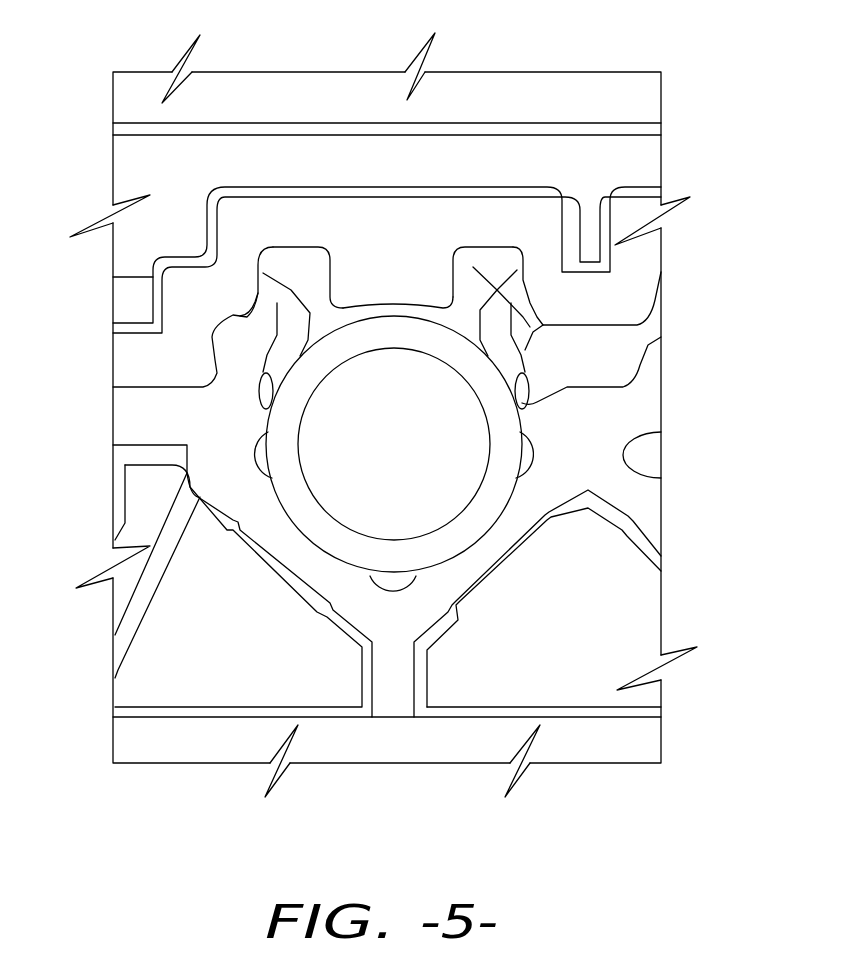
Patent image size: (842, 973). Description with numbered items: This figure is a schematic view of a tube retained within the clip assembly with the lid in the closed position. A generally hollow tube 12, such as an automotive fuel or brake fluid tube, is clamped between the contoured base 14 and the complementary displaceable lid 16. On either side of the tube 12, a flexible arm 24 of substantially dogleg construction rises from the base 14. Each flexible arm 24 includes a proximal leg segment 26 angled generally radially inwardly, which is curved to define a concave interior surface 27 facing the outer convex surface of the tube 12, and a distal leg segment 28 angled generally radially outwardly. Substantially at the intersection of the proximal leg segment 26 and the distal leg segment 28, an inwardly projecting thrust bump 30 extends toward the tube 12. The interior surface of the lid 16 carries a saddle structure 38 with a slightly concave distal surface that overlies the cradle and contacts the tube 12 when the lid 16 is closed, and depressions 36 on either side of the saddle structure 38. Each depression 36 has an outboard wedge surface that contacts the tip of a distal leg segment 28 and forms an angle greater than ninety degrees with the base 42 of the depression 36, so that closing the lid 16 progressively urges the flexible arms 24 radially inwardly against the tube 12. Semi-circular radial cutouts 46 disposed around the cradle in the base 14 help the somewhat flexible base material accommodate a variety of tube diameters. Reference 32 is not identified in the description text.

The tube 12 is at (323, 523).
The contoured base 14 is at (668, 606).
The displaceable lid 16 is at (376, 99).
The flexible arm 24 is at (213, 348).
The proximal leg segment 26 is at (246, 358).
The concave interior surface 27 is at (266, 400).
The distal leg segment 28 is at (263, 273).
The thrust bump 30 is at (267, 370).
The post top 32 is at (520, 267).
The depression 36 is at (291, 286).
The saddle structure 38 is at (379, 280).
The base of depression 42 is at (330, 247).
The radial cutout 46 is at (253, 450).